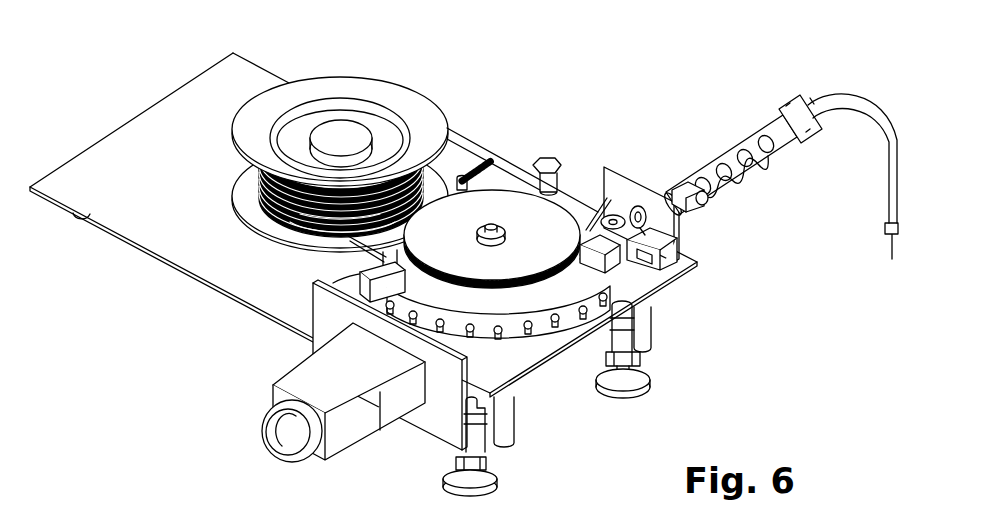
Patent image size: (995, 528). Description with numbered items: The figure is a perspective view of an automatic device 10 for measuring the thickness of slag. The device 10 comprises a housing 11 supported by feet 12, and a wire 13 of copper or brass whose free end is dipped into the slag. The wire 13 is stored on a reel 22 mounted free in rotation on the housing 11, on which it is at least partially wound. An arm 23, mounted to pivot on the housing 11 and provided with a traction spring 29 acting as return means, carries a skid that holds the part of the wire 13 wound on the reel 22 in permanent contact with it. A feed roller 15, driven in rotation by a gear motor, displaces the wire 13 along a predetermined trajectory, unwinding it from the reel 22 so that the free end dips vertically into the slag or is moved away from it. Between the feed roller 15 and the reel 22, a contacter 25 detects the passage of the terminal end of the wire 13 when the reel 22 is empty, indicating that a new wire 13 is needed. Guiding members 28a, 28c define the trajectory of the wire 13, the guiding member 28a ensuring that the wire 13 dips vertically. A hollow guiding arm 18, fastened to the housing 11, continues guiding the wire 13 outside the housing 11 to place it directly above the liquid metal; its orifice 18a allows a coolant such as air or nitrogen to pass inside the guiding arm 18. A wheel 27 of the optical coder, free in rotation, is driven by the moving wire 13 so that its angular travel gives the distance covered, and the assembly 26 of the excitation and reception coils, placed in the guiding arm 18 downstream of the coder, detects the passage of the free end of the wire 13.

The device for measuring the thickness of the slag 10 is at (464, 262).
The housing 11 is at (163, 210).
The feet 12 is at (637, 408).
The wire 13 is at (273, 207).
The feed roller 15 is at (537, 262).
The guiding arm 18 is at (742, 158).
The orifice 18a is at (708, 202).
The reel 22 is at (549, 154).
The arm 23 is at (517, 150).
The contacter 25 is at (312, 328).
The assembly of the excitation and reception coils 26 is at (737, 140).
The wheel 27 is at (619, 216).
The guiding member 28a is at (872, 100).
The guiding member 28c is at (332, 255).
The traction spring 29 is at (470, 157).